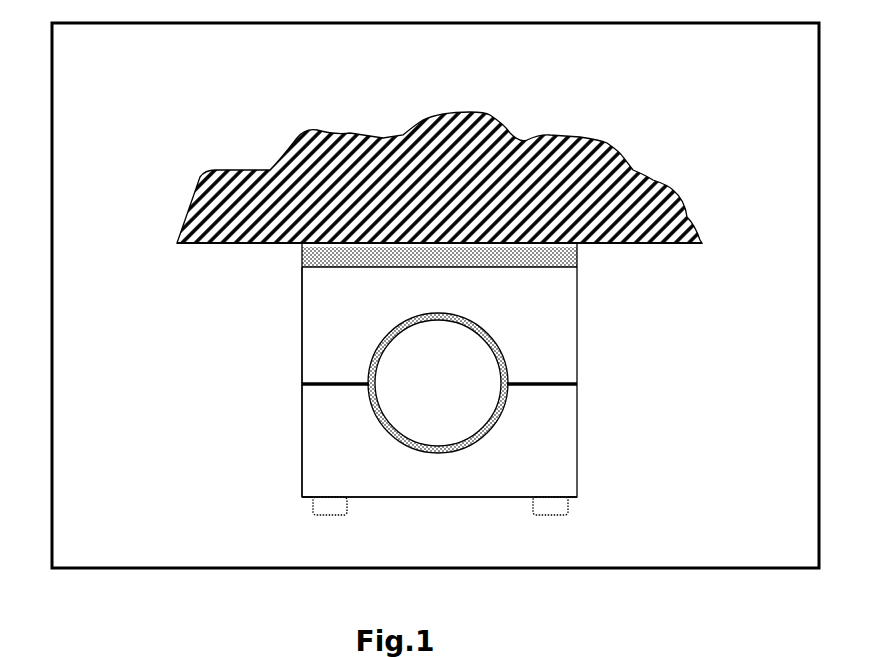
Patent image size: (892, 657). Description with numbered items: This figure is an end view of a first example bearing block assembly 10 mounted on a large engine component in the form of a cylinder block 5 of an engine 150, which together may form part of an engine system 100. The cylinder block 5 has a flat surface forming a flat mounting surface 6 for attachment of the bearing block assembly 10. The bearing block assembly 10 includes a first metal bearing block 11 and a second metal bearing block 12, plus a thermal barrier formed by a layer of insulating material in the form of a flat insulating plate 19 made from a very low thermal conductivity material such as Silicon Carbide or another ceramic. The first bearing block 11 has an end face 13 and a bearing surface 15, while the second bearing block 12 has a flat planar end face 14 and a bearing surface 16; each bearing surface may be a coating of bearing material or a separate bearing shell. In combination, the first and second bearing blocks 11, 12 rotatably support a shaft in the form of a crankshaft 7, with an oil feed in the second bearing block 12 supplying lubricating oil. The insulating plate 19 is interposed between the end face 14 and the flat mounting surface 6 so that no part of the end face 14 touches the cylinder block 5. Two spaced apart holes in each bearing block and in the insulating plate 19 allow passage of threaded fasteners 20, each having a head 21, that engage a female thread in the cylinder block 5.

The engine 150 is at (73, 23).
The engine system 100 is at (124, 108).
The cylinder block 5 is at (213, 173).
The flat mounting surface 6 is at (222, 243).
The flat insulating plate 19 is at (580, 253).
The flat planar end face 14 is at (337, 266).
The bearing block assembly 10 is at (580, 452).
The second bearing block 12 is at (301, 320).
The first bearing block 11 is at (301, 452).
The crankshaft 7 is at (373, 358).
The bearing surface 16 is at (490, 327).
The bearing surface 15 is at (503, 400).
The end face 13 is at (390, 497).
The head 21 is at (328, 515).
The threaded fasteners 20 is at (308, 508).